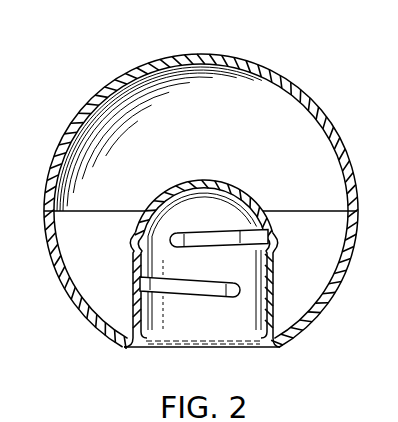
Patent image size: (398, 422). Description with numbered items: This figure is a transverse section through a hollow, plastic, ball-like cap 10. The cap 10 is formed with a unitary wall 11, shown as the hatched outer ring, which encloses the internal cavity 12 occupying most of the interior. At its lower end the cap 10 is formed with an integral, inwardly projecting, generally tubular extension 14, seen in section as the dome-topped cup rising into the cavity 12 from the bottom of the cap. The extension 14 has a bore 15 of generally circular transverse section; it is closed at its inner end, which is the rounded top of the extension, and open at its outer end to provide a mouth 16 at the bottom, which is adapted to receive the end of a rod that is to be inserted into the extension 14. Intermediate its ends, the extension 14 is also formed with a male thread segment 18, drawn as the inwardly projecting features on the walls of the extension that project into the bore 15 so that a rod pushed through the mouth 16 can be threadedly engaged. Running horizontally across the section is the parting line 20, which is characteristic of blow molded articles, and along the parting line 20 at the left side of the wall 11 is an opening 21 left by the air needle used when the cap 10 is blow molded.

The cap 10 is at (313, 77).
The unitary wall 11 is at (314, 111).
The internal cavity 12 is at (298, 150).
The tubular extension 14 is at (257, 209).
The bore 15 is at (233, 262).
The mouth 16 is at (236, 328).
The male thread segment 18 is at (204, 277).
The parting line 20 is at (114, 211).
The opening 21 is at (43, 210).